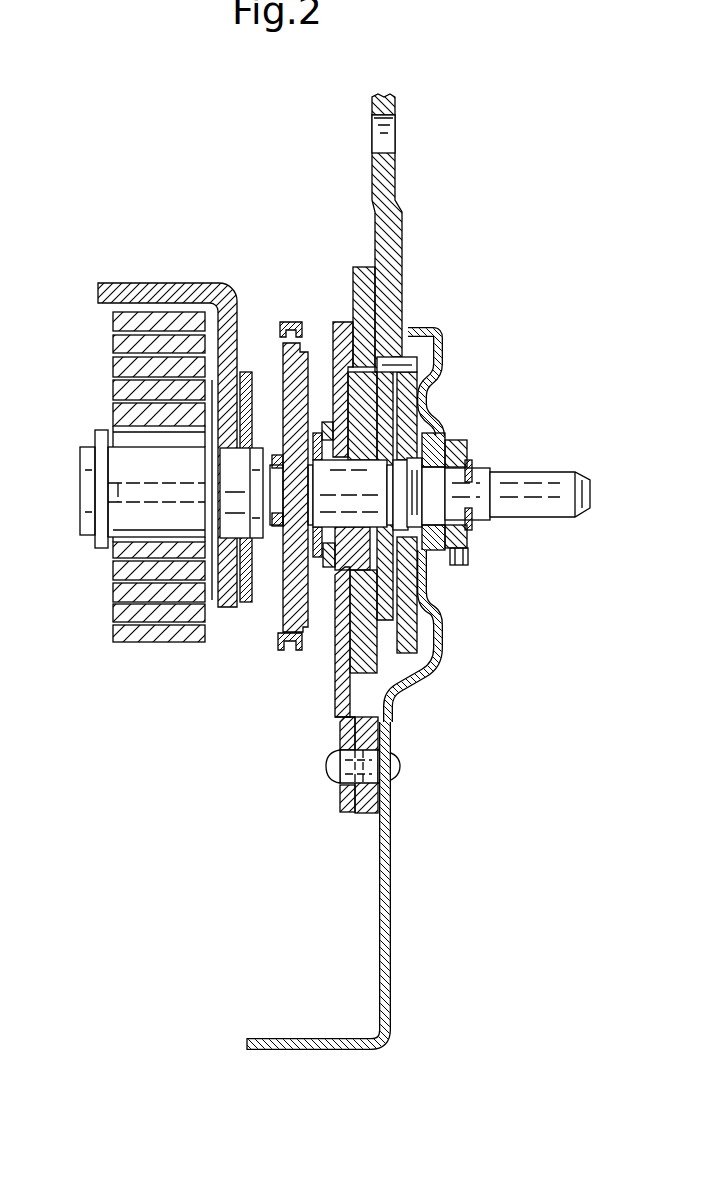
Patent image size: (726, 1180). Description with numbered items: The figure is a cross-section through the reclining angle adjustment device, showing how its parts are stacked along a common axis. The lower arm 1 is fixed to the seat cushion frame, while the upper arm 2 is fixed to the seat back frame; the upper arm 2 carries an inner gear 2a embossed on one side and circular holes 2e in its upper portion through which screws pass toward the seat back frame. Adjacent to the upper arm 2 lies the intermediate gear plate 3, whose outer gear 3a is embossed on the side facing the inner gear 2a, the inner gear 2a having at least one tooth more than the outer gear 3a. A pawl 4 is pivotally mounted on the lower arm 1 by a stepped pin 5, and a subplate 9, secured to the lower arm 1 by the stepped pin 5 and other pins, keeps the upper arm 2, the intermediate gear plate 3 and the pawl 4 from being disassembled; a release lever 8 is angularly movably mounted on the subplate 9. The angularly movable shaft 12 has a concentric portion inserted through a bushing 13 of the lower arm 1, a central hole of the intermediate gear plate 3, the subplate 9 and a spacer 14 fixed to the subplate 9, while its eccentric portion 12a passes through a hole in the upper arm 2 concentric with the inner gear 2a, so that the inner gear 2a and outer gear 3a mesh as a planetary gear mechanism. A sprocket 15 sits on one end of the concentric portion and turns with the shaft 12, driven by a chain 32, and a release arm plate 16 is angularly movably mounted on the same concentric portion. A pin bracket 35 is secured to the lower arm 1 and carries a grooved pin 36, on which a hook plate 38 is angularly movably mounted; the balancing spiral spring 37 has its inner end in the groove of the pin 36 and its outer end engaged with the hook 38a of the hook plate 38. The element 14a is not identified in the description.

The lower arm 1 is at (395, 885).
The upper arm 2 is at (397, 182).
The inner gear 2a is at (400, 350).
The circular holes 2e is at (397, 138).
The intermediate gear plate 3 is at (362, 665).
The outer gear 3a is at (400, 345).
The pawl 4 is at (360, 813).
The stepped pin 5 is at (400, 768).
The release lever 8 is at (330, 425).
The subplate 9 is at (343, 730).
The angularly movable shaft 12 is at (312, 557).
The eccentric portion 12a is at (460, 440).
The bushing 13 is at (440, 432).
The spacer 14 is at (340, 575).
The retaining clip 14a is at (337, 567).
The sprocket 15 is at (297, 340).
The release arm plate 16 is at (468, 545).
The chain 32 is at (280, 323).
The pin bracket 35 is at (243, 372).
The grooved pin 36 is at (133, 527).
The balancing spiral spring 37 is at (123, 588).
The hook plate 38 is at (219, 598).
The hook 38a is at (120, 290).